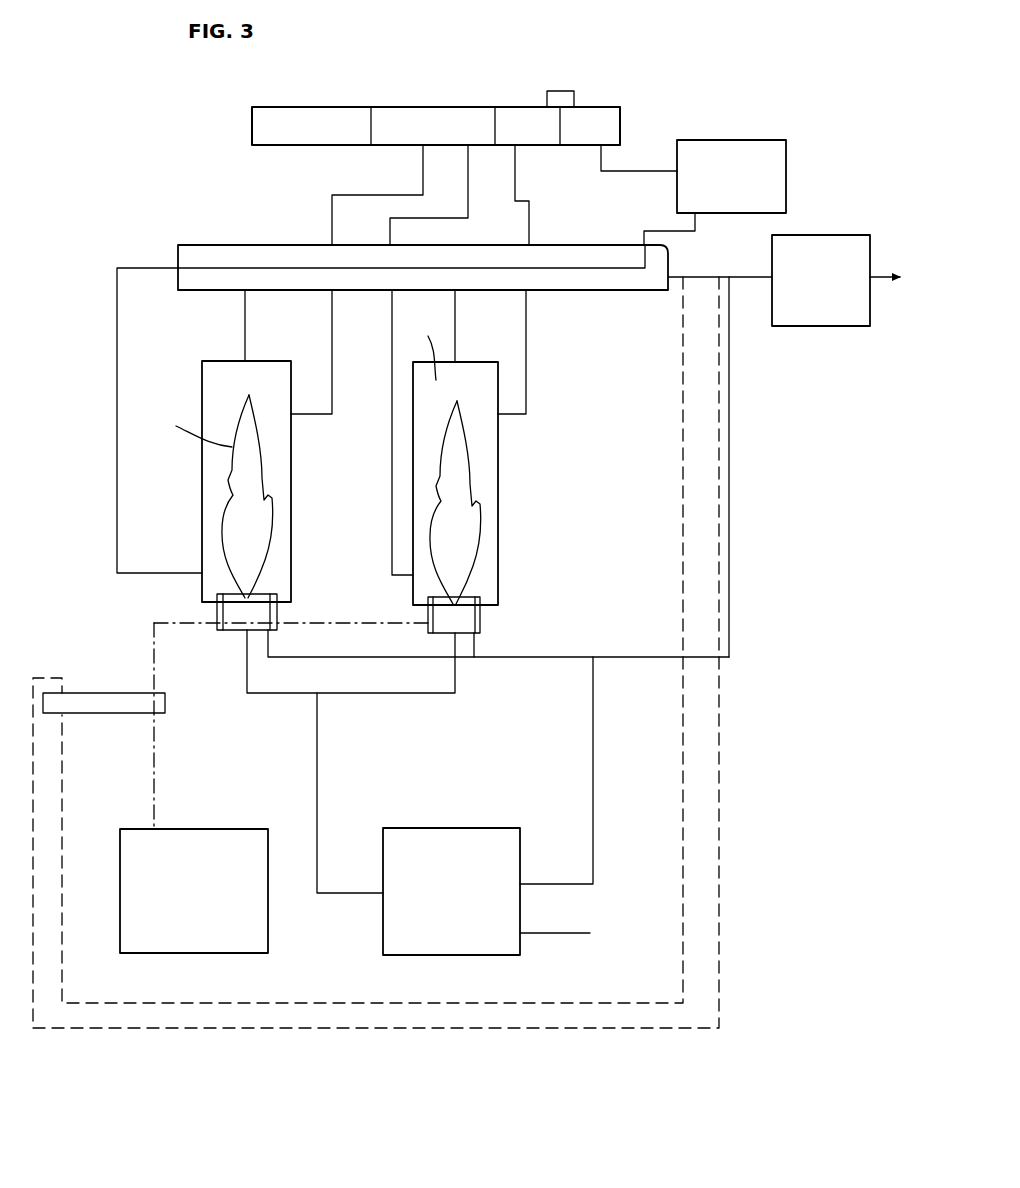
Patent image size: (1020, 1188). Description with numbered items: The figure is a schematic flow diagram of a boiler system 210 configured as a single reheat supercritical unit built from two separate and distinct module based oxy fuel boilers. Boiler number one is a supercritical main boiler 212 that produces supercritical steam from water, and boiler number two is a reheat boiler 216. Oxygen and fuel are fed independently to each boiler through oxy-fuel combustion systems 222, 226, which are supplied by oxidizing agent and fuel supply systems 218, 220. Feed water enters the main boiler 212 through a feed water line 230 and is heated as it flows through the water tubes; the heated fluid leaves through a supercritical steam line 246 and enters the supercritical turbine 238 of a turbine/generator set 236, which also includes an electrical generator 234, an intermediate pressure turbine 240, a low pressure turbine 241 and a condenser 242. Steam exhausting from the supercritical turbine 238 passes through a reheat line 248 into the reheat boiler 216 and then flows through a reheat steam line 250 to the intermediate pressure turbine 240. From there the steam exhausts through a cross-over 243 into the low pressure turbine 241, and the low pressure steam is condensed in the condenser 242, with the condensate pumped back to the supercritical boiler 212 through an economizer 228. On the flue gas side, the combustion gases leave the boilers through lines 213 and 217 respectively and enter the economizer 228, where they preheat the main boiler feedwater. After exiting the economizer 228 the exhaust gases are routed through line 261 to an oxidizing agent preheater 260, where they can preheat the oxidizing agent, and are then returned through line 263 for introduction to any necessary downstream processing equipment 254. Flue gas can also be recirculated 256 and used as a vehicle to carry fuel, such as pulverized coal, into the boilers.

The boiler system 210 is at (822, 132).
The supercritical main boiler 212 is at (202, 382).
The flue gas line 213 is at (246, 308).
The reheat boiler 216 is at (488, 466).
The flue gas line 217 is at (457, 308).
The oxidizing agent and fuel supply system 218 is at (270, 866).
The oxidizing agent and fuel supply system 220 is at (383, 915).
The oxy-fuel combustion system 222 is at (223, 632).
The oxy-fuel combustion system 226 is at (483, 628).
The economizer 228 is at (272, 256).
The feed water line 230 is at (117, 428).
The electrical generator 234 is at (258, 125).
The turbine/generator set 236 is at (347, 92).
The supercritical turbine 238 is at (388, 120).
The intermediate pressure turbine 240 is at (516, 104).
The low pressure turbine 241 is at (622, 128).
The condenser 242 is at (707, 152).
The cross-over 243 is at (555, 90).
The supercritical steam line 246 is at (308, 418).
The reheat line 248 is at (394, 556).
The reheat steam line 250 is at (528, 390).
The downstream processing equipment 254 is at (845, 235).
The flue gas recirculation 256 is at (731, 363).
The oxidizing agent preheater 260 is at (100, 713).
The line 261 is at (683, 838).
The line 263 is at (720, 735).